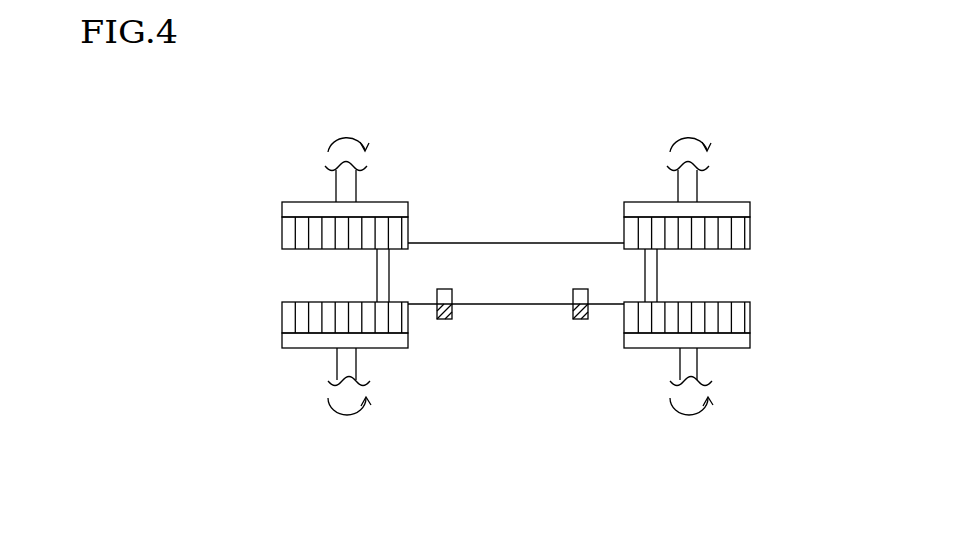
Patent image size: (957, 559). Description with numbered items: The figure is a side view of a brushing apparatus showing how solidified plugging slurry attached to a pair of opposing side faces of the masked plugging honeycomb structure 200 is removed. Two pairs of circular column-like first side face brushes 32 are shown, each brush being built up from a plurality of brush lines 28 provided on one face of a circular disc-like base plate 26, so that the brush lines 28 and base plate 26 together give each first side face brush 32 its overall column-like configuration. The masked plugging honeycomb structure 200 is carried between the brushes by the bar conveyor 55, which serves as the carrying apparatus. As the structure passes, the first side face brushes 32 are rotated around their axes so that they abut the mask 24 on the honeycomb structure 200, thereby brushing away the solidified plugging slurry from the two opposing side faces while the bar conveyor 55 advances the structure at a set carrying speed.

The first side face brush 32 is at (512, 262).
The base plate 26 is at (380, 210).
The brush lines 28 is at (295, 232).
The mask 24 is at (382, 270).
The masked plugging honeycomb structure 200 is at (520, 228).
The bar conveyor 55 is at (582, 319).